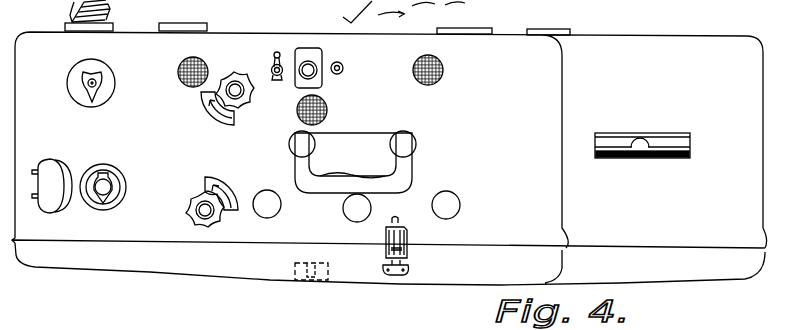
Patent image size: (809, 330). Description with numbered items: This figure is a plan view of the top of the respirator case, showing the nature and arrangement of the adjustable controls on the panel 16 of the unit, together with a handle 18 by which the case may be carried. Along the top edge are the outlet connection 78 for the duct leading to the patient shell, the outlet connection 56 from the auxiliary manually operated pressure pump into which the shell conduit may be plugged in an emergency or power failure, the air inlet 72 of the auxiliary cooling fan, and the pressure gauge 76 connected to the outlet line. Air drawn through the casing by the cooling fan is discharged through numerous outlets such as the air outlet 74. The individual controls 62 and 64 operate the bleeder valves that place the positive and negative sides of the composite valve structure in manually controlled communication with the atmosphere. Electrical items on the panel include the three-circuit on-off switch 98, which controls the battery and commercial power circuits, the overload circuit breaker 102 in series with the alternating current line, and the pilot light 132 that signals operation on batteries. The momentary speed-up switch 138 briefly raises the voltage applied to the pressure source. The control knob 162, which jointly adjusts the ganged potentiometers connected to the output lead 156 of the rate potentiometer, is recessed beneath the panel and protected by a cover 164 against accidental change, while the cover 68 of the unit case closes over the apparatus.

The front panel 16 is at (515, 178).
The carrying handle 18 is at (410, 165).
The outlet connection 56 is at (572, 28).
The bleeder valve control 62 is at (190, 205).
The bleeder valve control 64 is at (229, 74).
The cover 68 is at (257, 275).
The air inlet 72 is at (470, 29).
The air outlet 74 is at (442, 78).
The pressure gauge 76 is at (193, 27).
The outlet connection 78 is at (63, 25).
The three-circuit on-off switch 98 is at (277, 81).
The overload circuit breaker 102 is at (318, 80).
The pilot light 132 is at (344, 68).
The momentary contact switch 138 is at (310, 280).
The output lead 156 is at (103, 95).
The control knob 162 is at (110, 185).
The cover 164 is at (53, 162).